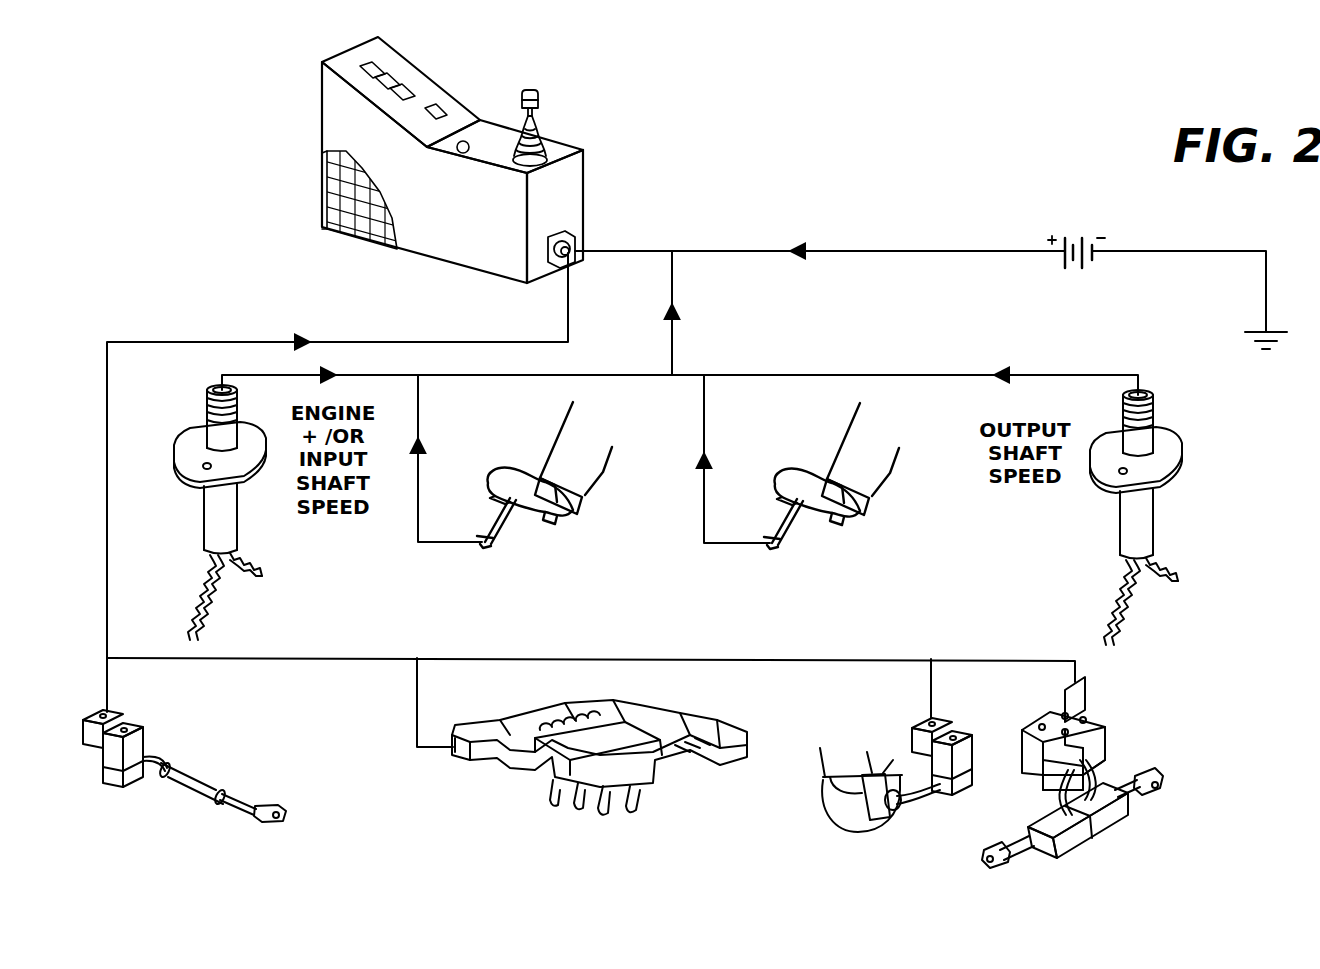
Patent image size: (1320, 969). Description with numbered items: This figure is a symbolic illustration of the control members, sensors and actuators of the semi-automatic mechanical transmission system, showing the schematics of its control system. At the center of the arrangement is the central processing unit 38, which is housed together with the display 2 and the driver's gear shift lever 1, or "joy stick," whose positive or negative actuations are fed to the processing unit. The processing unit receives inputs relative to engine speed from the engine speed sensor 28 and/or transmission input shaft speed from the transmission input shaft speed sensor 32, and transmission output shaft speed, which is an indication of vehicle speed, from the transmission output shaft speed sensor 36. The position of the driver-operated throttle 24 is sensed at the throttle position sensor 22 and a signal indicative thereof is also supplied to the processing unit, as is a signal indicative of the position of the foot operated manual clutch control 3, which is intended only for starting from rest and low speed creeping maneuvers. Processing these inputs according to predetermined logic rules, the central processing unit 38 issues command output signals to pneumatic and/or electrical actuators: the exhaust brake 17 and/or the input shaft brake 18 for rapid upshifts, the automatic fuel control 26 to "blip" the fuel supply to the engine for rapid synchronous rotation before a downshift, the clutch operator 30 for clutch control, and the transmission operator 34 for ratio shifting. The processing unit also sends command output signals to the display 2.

The gear shift lever 1 is at (535, 92).
The display 2 is at (455, 163).
The central processing unit 38 is at (448, 227).
The engine speed sensor 28 is at (203, 502).
The transmission input shaft speed sensor 32 is at (203, 502).
The manual clutch control 3 is at (545, 550).
The throttle 24 is at (815, 499).
The throttle position sensor 22 is at (808, 534).
The transmission output shaft speed sensor 36 is at (1097, 542).
The clutch operator 30 is at (235, 768).
The transmission operator 34 is at (693, 707).
The input shaft brake 18 is at (933, 726).
The exhaust brake 17 is at (957, 695).
The automatic fuel control 26 is at (1147, 757).